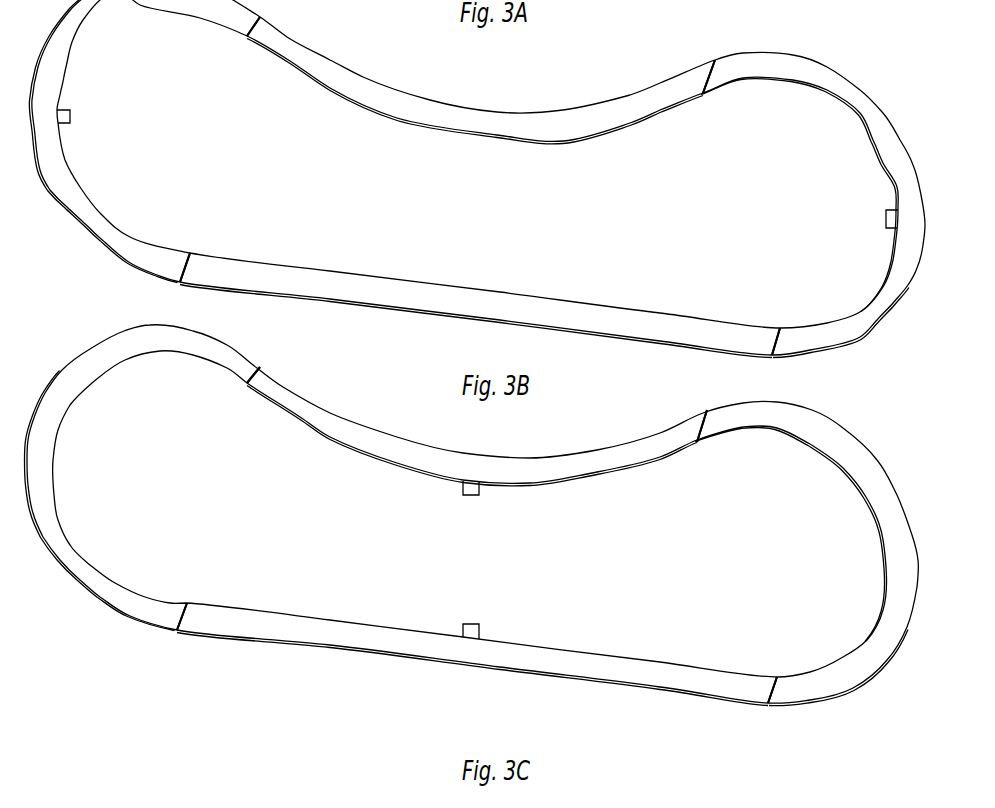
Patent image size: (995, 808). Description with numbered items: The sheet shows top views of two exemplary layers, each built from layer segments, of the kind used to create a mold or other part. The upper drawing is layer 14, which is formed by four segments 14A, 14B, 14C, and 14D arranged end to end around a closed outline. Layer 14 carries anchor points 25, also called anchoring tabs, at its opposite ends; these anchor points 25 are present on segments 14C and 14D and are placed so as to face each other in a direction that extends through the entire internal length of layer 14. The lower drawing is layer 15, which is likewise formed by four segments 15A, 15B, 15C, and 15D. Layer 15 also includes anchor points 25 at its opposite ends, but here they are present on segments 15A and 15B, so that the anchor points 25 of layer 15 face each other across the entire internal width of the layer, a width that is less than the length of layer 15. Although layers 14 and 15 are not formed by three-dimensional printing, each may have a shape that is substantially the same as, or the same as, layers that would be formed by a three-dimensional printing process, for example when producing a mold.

In FIG. 3B, the layer 14 is at (55, 78).
In FIG. 3B, the layer segment 14A is at (310, 275).
In FIG. 3B, the layer segment 14B is at (331, 95).
In FIG. 3B, the layer segment 14C is at (100, 218).
In FIG. 3B, the layer segment 14D is at (797, 72).
In FIG. 3B, the anchor point 25 is at (72, 114).
In FIG. 3C, the anchor point 25 is at (472, 497).
In FIG. 3C, the layer 15 is at (45, 433).
In FIG. 3C, the layer segment 15A is at (309, 620).
In FIG. 3C, the layer segment 15B is at (331, 445).
In FIG. 3C, the layer segment 15C is at (100, 568).
In FIG. 3C, the layer segment 15D is at (797, 422).